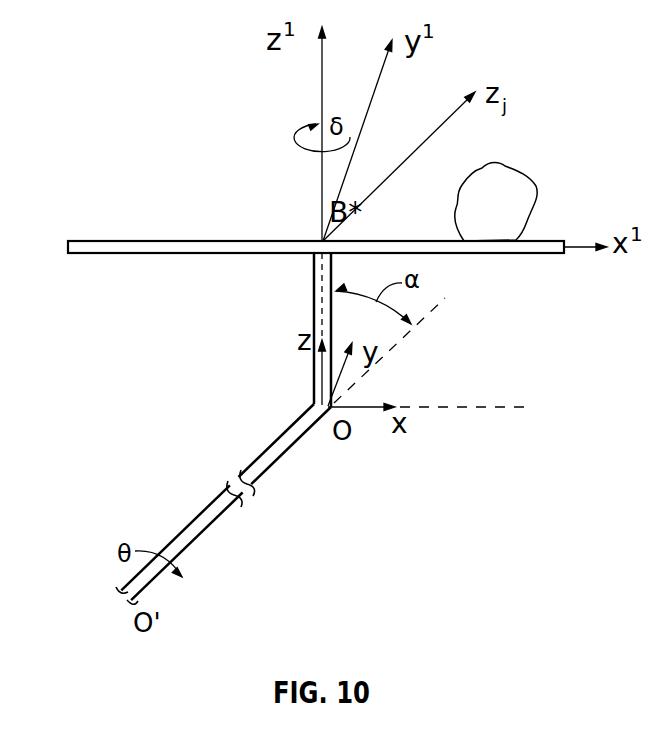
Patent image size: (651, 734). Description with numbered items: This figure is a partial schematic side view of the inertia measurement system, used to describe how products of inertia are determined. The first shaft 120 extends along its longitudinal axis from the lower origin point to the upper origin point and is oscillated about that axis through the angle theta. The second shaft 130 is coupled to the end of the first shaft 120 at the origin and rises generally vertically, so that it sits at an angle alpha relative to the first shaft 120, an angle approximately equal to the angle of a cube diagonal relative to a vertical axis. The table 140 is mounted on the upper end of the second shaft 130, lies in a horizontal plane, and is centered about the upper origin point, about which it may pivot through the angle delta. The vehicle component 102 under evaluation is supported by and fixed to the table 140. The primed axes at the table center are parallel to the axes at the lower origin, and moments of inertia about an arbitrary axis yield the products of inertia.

The vehicle component 102 is at (502, 165).
The first shaft 120 is at (208, 505).
The second shaft 130 is at (314, 276).
The table 140 is at (86, 240).